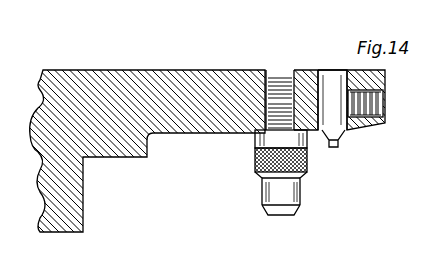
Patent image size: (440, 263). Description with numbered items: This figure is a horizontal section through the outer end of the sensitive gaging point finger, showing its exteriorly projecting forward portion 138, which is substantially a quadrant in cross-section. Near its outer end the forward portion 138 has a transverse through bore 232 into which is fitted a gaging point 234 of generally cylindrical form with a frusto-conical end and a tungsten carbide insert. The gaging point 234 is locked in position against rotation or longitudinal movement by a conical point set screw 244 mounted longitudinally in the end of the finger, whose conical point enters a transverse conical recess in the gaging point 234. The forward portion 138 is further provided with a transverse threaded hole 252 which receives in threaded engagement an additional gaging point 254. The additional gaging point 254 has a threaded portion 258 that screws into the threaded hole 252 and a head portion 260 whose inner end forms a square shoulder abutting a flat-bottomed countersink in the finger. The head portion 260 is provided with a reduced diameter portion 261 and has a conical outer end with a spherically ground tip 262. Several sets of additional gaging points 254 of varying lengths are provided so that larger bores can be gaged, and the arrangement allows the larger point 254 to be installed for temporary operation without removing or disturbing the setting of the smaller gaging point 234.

The exteriorly projecting forward portion 138 is at (220, 133).
The transverse threaded hole 252 is at (279, 77).
The gaging point 234 is at (326, 70).
The conical point set screw 244 is at (386, 100).
The transverse through bore 232 is at (346, 95).
The threaded portion 258 is at (267, 112).
The head portion 260 is at (306, 164).
The additional gaging point 254 is at (257, 185).
The reduced diameter portion 261 is at (302, 195).
The spherically ground tip 262 is at (285, 215).